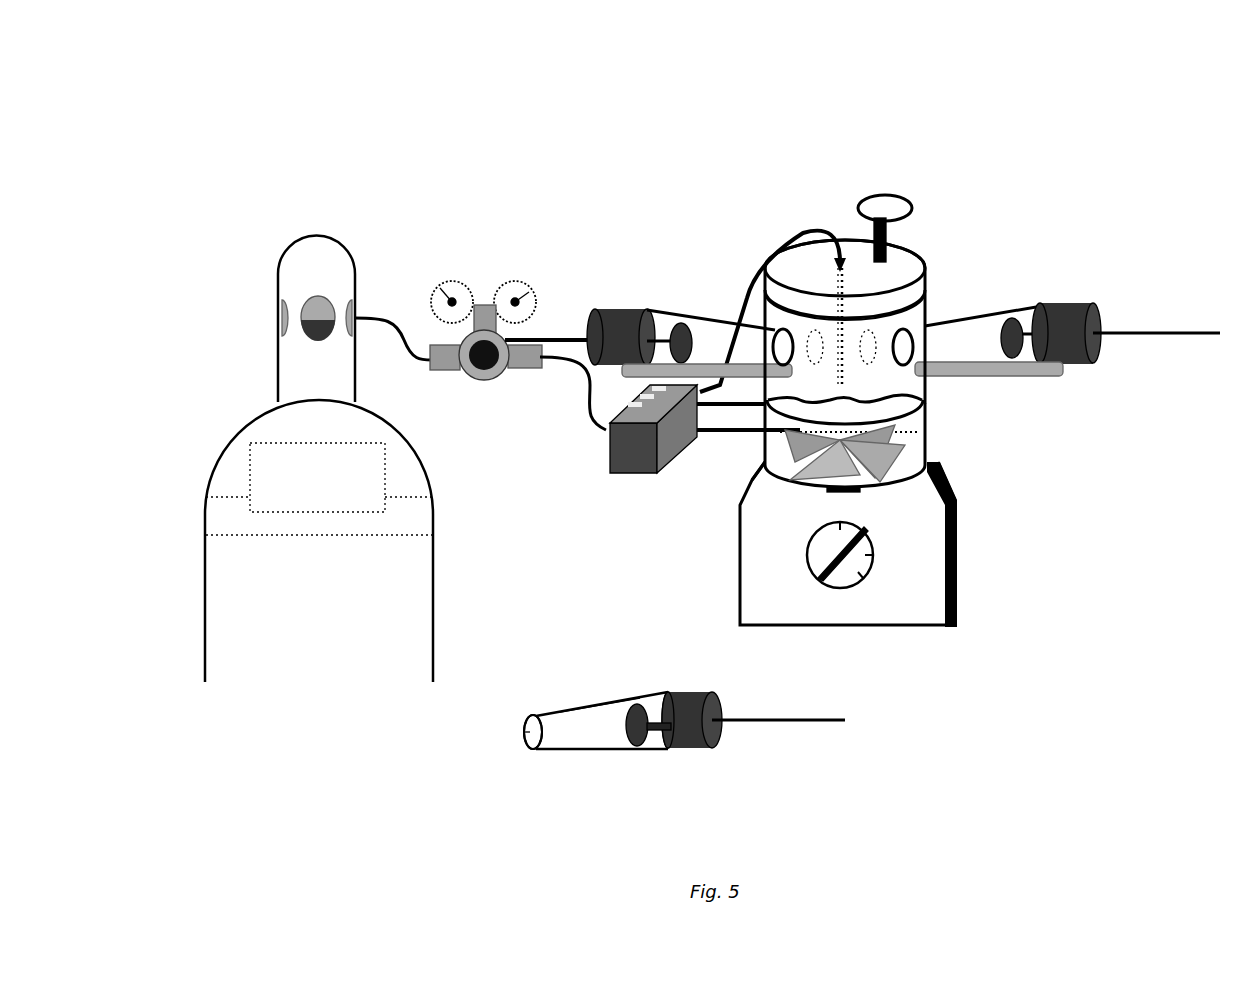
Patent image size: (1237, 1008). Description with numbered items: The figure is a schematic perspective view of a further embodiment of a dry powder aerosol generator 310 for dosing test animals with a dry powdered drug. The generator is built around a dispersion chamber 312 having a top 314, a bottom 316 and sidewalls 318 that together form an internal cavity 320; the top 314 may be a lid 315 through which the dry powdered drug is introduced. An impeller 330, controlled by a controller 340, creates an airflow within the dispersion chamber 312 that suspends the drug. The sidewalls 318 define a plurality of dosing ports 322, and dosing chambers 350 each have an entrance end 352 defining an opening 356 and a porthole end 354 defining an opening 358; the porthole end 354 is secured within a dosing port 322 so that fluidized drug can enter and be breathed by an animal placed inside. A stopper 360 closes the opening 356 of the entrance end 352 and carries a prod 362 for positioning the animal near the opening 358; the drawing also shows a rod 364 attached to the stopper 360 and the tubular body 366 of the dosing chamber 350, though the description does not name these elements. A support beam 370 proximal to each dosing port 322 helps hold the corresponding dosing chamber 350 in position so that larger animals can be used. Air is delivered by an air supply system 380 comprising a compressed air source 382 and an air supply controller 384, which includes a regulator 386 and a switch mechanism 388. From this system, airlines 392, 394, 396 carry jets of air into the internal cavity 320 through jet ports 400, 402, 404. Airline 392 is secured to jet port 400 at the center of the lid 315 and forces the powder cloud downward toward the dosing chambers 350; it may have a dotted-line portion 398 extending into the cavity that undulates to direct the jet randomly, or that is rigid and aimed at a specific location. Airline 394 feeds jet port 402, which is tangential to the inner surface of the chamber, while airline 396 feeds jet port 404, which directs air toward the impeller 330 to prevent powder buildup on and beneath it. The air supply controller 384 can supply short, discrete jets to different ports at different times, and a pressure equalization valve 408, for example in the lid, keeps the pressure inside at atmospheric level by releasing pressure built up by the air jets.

The dry powder aerosol generator 310 is at (975, 130).
The dispersion chamber 312 is at (952, 266).
The top 314 is at (758, 262).
The lid 315 is at (920, 256).
The bottom 316 is at (932, 470).
The sidewalls 318 is at (928, 292).
The internal cavity 320 is at (905, 430).
The dosing ports 322 is at (822, 320).
The impeller 330 is at (946, 522).
The controller 340 is at (832, 624).
The dosing chambers 350 is at (670, 314).
The entrance end 352 is at (683, 692).
The porthole end 354 is at (534, 718).
The opening 356 is at (668, 696).
The opening 358 is at (526, 733).
The stopper 360 is at (700, 750).
The prod 362 is at (660, 745).
The plunger rod 364 is at (800, 722).
The barrel 366 is at (630, 716).
The support beam 370 is at (622, 374).
The air supply system 380 is at (280, 234).
The compressed air source 382 is at (238, 440).
The air supply controller 384 is at (602, 479).
The regulator 386 is at (492, 300).
The switch mechanism 388 is at (626, 476).
The airline 392 is at (801, 230).
The airline 394 is at (747, 410).
The airline 396 is at (697, 440).
The portion 398 is at (885, 375).
The jet port 400 is at (843, 270).
The jet port 402 is at (930, 402).
The jet port 404 is at (778, 448).
The pressure equalization valve 408 is at (890, 216).